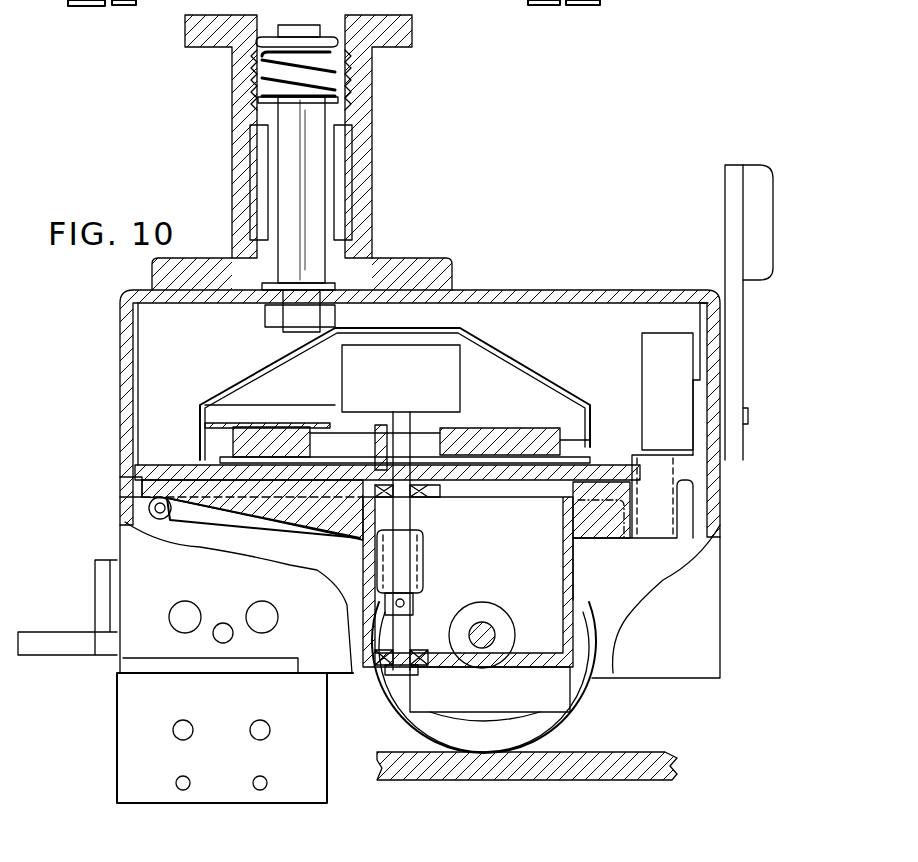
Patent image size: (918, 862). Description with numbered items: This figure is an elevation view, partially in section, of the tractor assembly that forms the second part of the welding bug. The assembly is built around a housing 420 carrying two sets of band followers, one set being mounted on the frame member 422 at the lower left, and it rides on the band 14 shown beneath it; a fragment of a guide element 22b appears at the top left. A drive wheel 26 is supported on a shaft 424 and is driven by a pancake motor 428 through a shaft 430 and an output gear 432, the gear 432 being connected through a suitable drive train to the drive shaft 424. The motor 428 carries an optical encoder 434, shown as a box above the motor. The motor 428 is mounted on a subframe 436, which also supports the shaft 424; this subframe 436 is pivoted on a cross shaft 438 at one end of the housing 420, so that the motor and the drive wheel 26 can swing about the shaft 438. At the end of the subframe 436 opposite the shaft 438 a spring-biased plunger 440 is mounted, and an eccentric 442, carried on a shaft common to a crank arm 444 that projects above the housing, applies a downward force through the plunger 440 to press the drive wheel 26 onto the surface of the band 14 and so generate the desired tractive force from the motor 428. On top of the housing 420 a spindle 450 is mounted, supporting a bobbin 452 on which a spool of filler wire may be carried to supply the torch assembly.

The band 14 is at (625, 760).
The guide rail 22b is at (128, 6).
The drive wheel 26 is at (527, 722).
The housing 420 is at (497, 298).
The frame member 422 is at (140, 720).
The shaft 424 is at (488, 625).
The pancake motor 428 is at (468, 440).
The shaft 430 is at (403, 520).
The output gear 432 is at (405, 570).
The optical encoder 434 is at (401, 378).
The subframe 436 is at (338, 530).
The cross shaft 438 is at (158, 520).
The spring-biased plunger 440 is at (650, 525).
The eccentric 442 is at (655, 360).
The crank arm 444 is at (728, 218).
The spindle 450 is at (305, 172).
The bobbin 452 is at (355, 226).